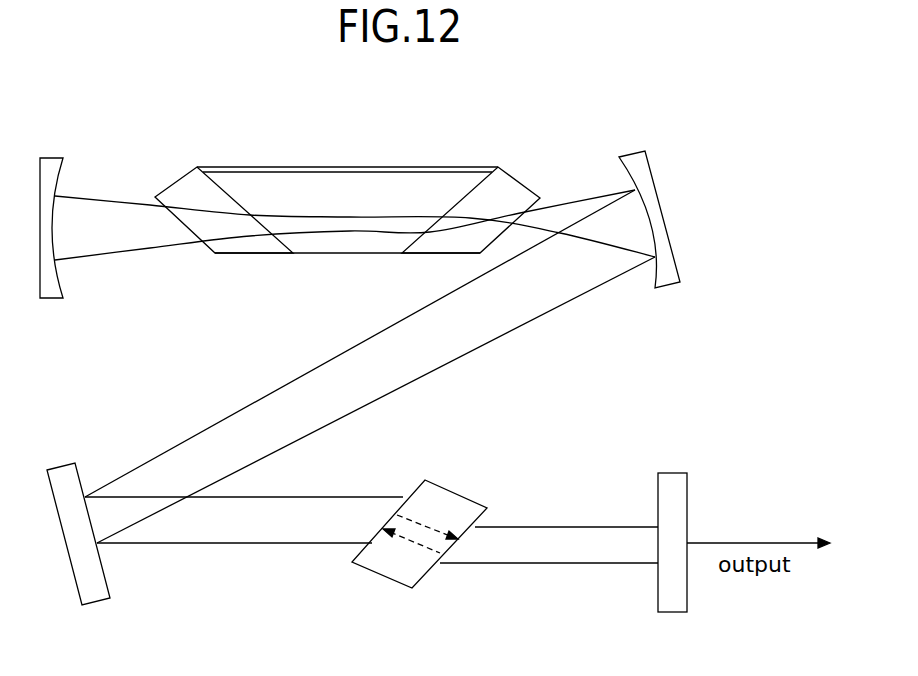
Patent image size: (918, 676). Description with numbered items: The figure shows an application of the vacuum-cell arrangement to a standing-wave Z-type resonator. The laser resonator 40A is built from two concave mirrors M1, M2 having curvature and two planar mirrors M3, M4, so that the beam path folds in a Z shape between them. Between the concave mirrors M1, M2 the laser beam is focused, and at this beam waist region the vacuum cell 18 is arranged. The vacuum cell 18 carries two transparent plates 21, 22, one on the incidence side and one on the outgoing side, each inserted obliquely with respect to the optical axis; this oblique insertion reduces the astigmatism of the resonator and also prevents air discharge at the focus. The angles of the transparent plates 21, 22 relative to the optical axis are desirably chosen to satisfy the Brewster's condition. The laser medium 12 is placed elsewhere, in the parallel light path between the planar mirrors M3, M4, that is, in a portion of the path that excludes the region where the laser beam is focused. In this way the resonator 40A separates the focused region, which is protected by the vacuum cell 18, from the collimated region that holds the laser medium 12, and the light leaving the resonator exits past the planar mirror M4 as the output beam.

The laser resonator 40A is at (383, 118).
The vacuum cell 18 is at (414, 161).
The transparent plate 22 is at (182, 174).
The transparent plate 21 is at (518, 172).
The laser medium 12 is at (423, 482).
The concave mirror M1 is at (668, 289).
The concave mirror M2 is at (50, 300).
The planar mirror M3 is at (58, 468).
The planar mirror M4 is at (672, 473).